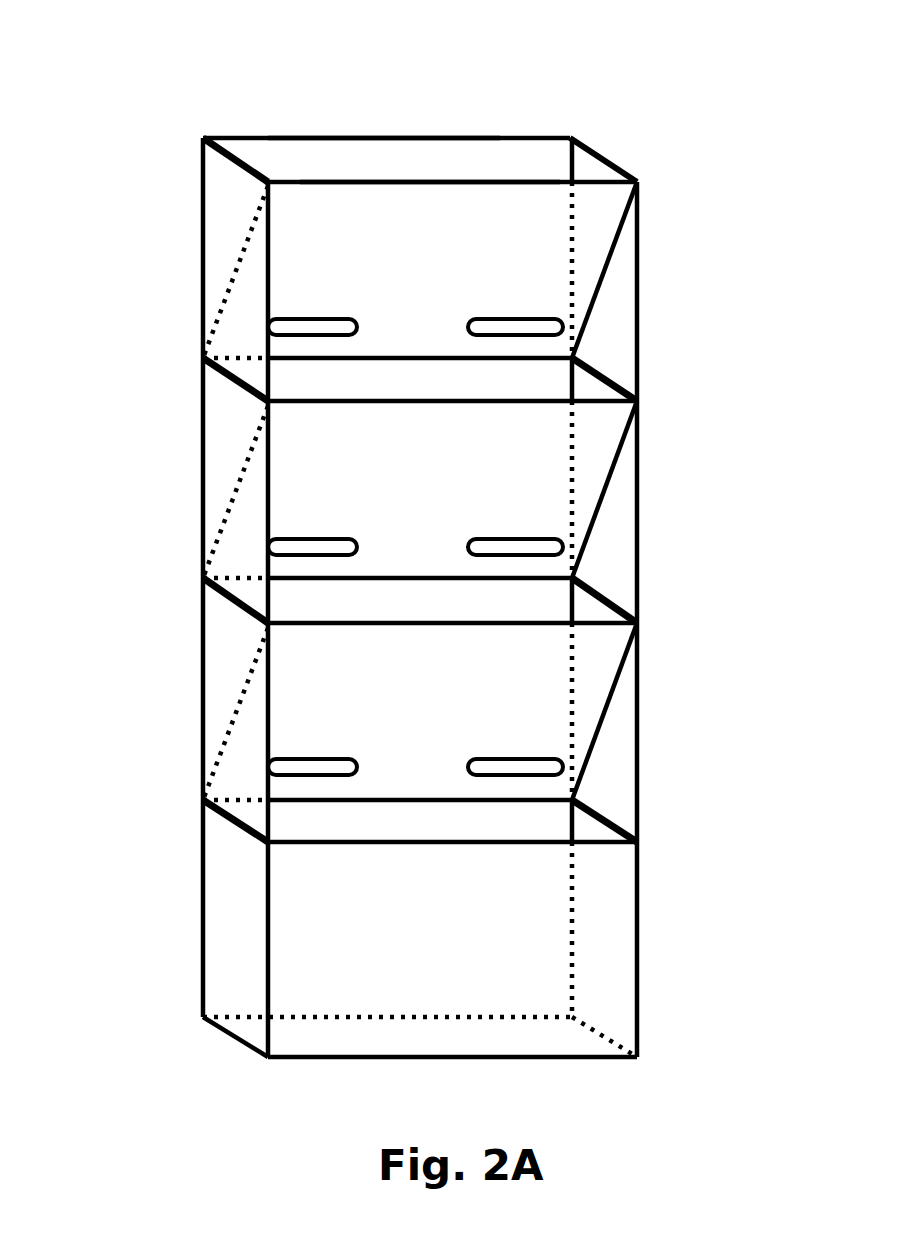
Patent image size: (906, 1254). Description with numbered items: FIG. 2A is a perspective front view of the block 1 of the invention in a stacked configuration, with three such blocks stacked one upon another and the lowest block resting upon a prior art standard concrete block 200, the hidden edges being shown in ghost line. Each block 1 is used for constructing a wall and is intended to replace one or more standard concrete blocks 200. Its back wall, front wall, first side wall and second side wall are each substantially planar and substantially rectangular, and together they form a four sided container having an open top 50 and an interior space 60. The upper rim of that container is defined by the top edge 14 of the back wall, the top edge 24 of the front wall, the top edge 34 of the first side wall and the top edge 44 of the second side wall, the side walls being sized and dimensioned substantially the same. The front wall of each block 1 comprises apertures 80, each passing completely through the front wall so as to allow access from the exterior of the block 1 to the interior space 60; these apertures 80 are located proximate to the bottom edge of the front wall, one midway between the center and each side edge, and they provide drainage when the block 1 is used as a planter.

The block 1 is at (200, 203).
The standard concrete block 200 is at (200, 876).
The aperture 80 is at (518, 545).
The top edge of second side wall 44 is at (235, 158).
The top edge of first side wall 34 is at (605, 155).
The top edge of back wall 14 is at (310, 135).
The interior space 60 is at (355, 168).
The open top 50 is at (425, 150).
The top edge of front wall 24 is at (478, 178).